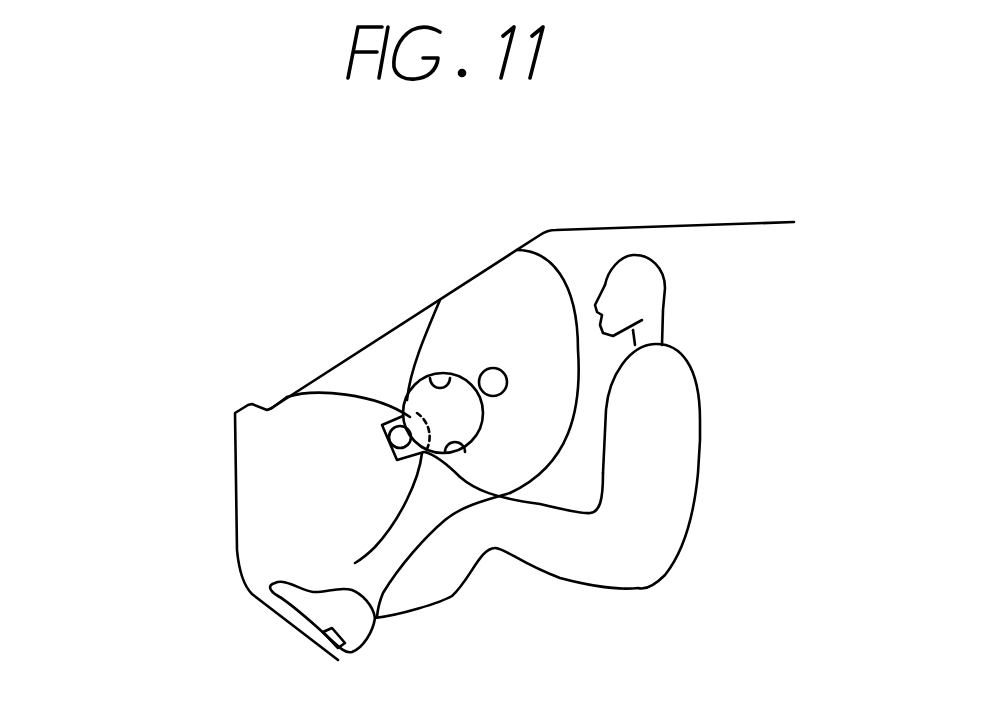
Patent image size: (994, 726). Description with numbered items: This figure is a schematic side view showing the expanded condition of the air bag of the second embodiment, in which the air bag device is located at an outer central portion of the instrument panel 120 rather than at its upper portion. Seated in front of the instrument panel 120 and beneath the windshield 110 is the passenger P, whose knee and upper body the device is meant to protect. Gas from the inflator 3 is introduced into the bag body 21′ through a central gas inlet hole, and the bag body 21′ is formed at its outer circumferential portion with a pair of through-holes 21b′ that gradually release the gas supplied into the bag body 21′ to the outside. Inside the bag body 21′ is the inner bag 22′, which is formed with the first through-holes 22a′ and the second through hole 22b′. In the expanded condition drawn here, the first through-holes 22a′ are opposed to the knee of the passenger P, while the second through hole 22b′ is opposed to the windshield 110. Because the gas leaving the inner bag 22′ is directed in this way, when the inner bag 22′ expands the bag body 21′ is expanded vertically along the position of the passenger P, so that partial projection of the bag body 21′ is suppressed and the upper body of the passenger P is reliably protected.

The windshield 110 is at (367, 345).
The instrument panel 120 is at (330, 427).
The inflator 3 is at (403, 437).
The bag body 21′ is at (548, 278).
The through-holes 21b′ is at (497, 377).
The inner bag 22′ is at (457, 422).
The first through-holes 22a′ is at (456, 453).
The second through hole 22b′ is at (440, 372).
The passenger P is at (680, 450).